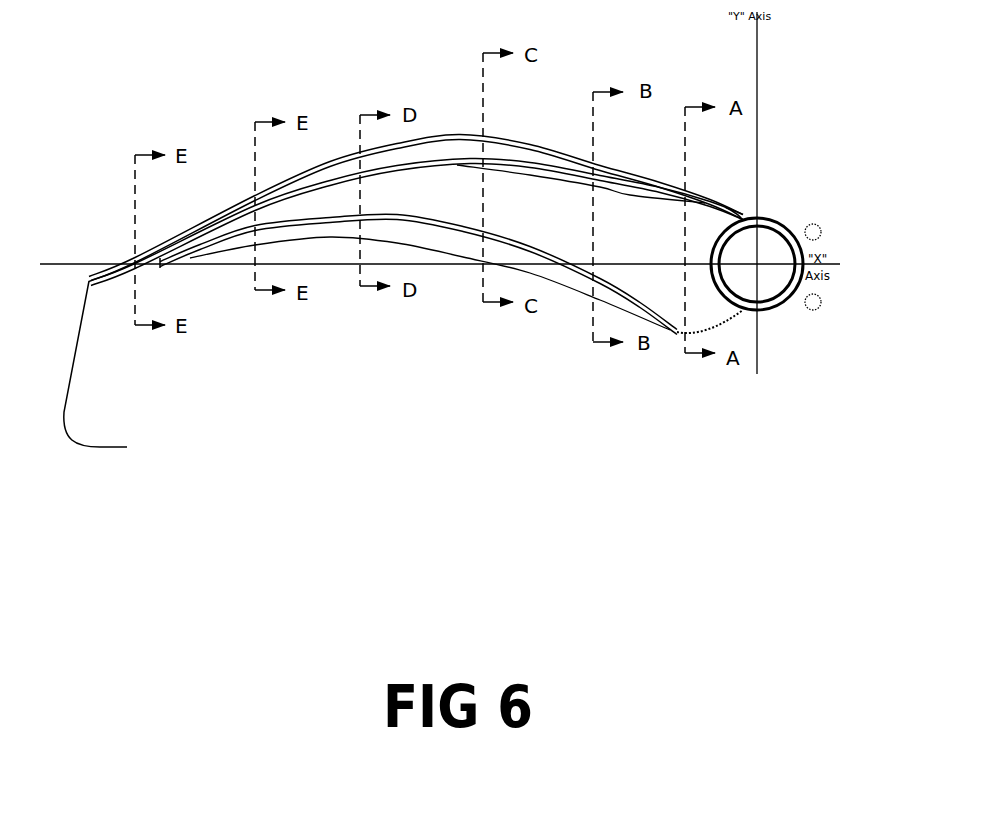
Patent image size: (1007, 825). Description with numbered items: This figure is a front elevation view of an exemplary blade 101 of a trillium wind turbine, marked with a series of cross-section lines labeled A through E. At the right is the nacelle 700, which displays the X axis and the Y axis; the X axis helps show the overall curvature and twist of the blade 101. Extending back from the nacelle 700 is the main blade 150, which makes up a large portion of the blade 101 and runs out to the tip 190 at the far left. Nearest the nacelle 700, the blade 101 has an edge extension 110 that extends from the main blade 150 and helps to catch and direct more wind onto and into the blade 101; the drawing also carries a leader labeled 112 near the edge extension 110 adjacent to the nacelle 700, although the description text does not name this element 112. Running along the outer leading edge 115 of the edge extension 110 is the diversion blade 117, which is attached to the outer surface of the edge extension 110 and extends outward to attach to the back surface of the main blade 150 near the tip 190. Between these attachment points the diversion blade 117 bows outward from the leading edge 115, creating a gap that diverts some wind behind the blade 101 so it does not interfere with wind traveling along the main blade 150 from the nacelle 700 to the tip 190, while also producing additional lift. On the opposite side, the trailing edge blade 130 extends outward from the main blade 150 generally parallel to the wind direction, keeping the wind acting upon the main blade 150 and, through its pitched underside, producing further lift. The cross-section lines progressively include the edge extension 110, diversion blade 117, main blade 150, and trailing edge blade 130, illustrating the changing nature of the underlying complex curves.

The blade 101 is at (316, 392).
The edge extension 110 is at (648, 188).
The trailing edge 112 is at (703, 230).
The outer leading edge 115 is at (382, 172).
The diversion blade 117 is at (443, 138).
The trailing edge blade 130 is at (566, 278).
The main blade 150 is at (465, 210).
The tip 190 is at (118, 372).
The nacelle 700 is at (773, 308).